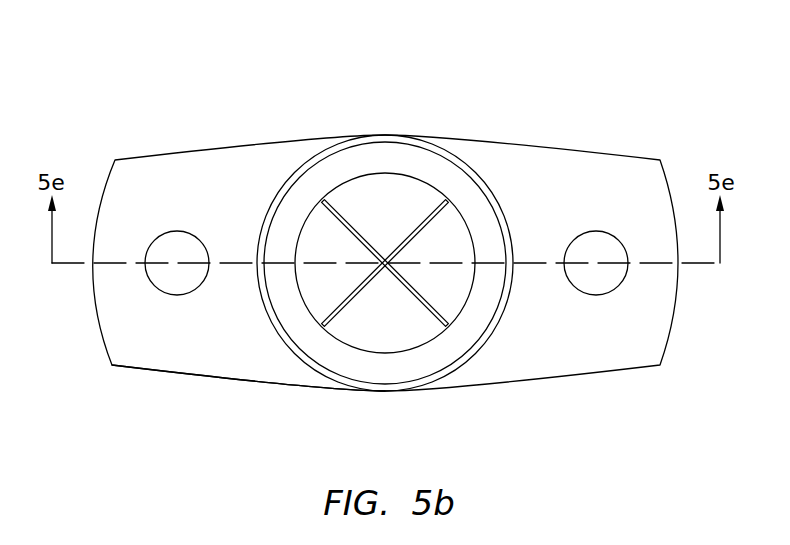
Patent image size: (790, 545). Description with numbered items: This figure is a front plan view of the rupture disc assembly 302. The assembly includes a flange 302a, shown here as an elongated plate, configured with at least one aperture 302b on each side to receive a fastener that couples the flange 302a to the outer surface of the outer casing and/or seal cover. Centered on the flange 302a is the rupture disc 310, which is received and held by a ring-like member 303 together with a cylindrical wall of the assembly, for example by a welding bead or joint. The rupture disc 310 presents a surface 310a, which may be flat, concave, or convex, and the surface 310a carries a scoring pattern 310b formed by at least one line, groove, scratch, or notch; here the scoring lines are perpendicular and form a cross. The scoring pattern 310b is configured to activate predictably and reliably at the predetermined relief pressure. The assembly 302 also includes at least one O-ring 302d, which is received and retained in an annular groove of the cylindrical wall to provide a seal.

The rupture disc assembly 302 is at (174, 93).
The flange 302a is at (210, 355).
The aperture 302b is at (180, 248).
The O-ring 302d is at (493, 187).
The ring-like member 303 is at (445, 172).
The rupture disc 310 is at (450, 287).
The surface 310a is at (373, 320).
The scoring pattern 310b is at (417, 227).